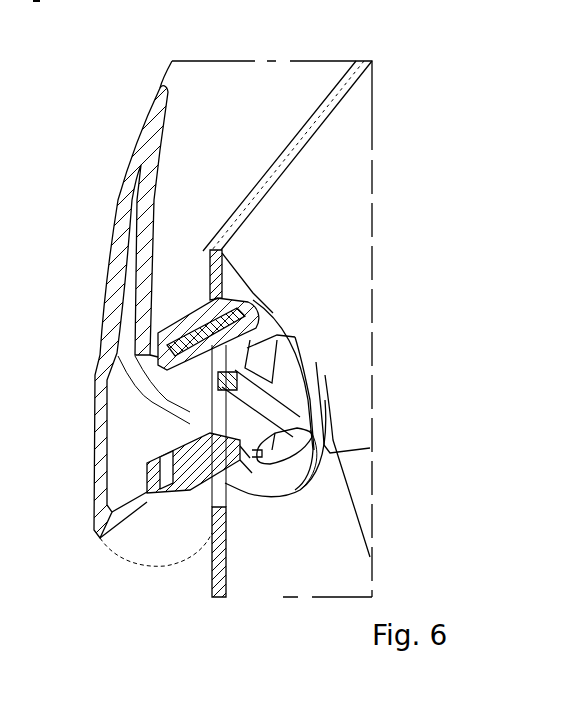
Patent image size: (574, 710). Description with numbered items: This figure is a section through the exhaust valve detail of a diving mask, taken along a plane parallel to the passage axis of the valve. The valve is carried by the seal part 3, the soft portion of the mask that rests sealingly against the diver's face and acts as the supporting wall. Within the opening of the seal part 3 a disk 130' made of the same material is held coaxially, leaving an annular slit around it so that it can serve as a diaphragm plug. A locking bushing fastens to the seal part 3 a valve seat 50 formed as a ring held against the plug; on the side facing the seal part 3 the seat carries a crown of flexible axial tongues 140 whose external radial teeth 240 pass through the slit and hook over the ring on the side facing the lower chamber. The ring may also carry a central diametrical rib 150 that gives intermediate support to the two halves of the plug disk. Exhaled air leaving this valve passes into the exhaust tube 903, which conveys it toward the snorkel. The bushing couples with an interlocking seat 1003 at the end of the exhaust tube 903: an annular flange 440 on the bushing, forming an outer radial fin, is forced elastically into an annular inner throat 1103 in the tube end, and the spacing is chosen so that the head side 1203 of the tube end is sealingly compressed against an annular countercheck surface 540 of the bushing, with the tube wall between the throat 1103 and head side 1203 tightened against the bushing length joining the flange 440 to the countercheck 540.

The seal part 3 is at (303, 122).
The valve seat 50 is at (263, 335).
The flexible axial tongues 140 is at (280, 362).
The external radial teeth 240 is at (308, 375).
The central diametrical rib 150 is at (283, 414).
The disk 130' is at (206, 391).
The annular flange 440 is at (165, 490).
The annular countercheck surface 540 is at (197, 470).
The exhaust tube 903 is at (118, 237).
The interlocking seat 1003 is at (84, 511).
The annular inner throat 1103 is at (184, 333).
The head side 1203 is at (206, 328).